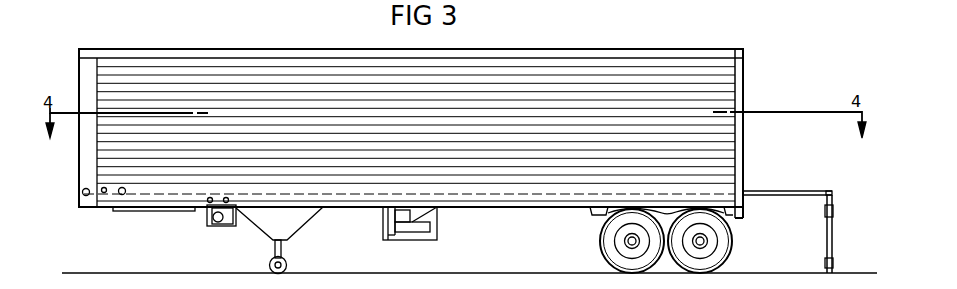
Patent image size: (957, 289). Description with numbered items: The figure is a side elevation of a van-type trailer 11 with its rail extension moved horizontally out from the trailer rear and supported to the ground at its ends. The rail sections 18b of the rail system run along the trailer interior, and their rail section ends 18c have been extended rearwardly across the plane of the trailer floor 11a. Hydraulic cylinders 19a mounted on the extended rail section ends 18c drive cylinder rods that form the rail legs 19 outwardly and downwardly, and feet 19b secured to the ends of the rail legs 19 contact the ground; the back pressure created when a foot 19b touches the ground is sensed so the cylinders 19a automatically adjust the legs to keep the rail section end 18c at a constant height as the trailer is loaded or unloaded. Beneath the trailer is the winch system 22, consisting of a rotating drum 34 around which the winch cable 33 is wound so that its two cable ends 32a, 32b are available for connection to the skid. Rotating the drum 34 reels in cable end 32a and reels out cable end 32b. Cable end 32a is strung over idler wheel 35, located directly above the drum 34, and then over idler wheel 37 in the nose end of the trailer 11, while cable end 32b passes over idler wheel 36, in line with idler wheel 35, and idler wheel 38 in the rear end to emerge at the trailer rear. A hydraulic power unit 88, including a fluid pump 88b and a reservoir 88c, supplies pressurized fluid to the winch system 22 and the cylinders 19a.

The van-type trailer 11 is at (629, 50).
The trailer floor 11a is at (576, 200).
The rail section 18b is at (767, 194).
The rail section end 18c is at (833, 191).
The rail leg 19 is at (833, 241).
The hydraulic cylinder 19a is at (834, 207).
The foot 19b is at (834, 268).
The winch system 22 is at (218, 231).
The cable end 32a is at (104, 190).
The cable end 32b is at (120, 195).
The winch cable 33 is at (363, 197).
The rotating drum 34 is at (215, 226).
The idler wheel 35 is at (208, 203).
The idler wheel 36 is at (229, 203).
The idler wheel 37 is at (78, 195).
The idler wheel 38 is at (737, 219).
The hydraulic power unit 88 is at (411, 240).
The fluid pump 88b is at (400, 224).
The reservoir 88c is at (420, 228).